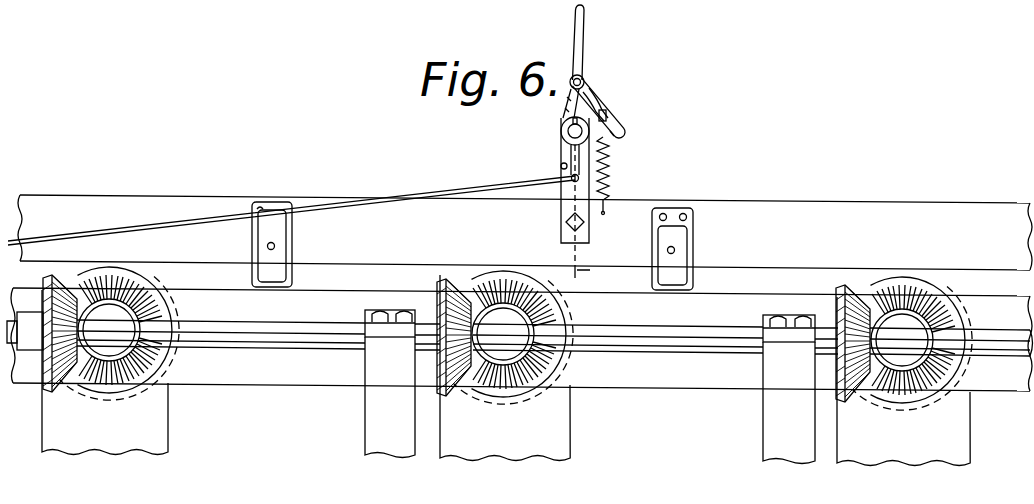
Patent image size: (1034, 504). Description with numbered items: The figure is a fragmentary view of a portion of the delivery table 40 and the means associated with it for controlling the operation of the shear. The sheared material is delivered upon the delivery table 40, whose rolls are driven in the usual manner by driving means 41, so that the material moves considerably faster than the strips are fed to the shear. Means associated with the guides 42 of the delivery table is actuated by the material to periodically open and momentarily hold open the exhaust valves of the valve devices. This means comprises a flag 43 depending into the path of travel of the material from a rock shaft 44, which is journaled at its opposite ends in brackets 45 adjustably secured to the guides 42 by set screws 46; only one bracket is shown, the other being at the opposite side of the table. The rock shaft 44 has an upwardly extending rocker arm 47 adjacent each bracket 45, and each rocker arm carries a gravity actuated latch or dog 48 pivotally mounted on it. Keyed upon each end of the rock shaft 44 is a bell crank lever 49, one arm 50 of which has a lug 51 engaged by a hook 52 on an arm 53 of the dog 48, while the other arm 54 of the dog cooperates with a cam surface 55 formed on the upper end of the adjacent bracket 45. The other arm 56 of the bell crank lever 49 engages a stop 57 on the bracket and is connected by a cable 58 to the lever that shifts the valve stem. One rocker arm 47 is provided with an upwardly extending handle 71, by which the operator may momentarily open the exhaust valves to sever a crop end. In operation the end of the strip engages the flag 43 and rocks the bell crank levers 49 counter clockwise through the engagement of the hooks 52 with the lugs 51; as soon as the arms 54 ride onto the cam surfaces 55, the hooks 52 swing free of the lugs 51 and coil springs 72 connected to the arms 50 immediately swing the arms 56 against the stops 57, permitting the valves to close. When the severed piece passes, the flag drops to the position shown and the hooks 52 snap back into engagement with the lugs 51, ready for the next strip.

The delivery table 40 is at (157, 292).
The driving means 41 is at (72, 382).
The guides 42 is at (110, 205).
The flag 43 is at (595, 215).
The rock shaft 44 is at (561, 130).
The brackets 45 is at (562, 190).
The set screws 46 is at (565, 223).
The rocker arm 47 is at (570, 88).
The dog 48 is at (586, 81).
The bell crank lever 49 is at (568, 139).
The arm 50 is at (606, 110).
The lug 51 is at (616, 119).
The hook 52 is at (621, 135).
The arm 53 is at (606, 99).
The arm 54 is at (567, 97).
The cam surface 55 is at (565, 108).
The arm 56 is at (570, 157).
The stop 57 is at (561, 167).
The cable 58 is at (200, 219).
The handle 71 is at (576, 27).
The coil springs 72 is at (611, 171).